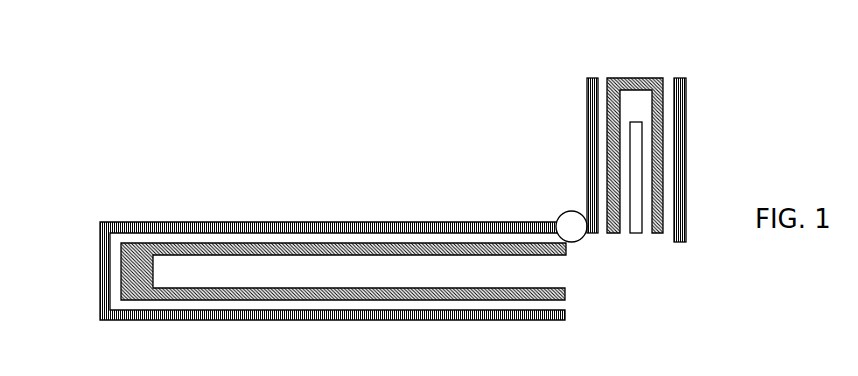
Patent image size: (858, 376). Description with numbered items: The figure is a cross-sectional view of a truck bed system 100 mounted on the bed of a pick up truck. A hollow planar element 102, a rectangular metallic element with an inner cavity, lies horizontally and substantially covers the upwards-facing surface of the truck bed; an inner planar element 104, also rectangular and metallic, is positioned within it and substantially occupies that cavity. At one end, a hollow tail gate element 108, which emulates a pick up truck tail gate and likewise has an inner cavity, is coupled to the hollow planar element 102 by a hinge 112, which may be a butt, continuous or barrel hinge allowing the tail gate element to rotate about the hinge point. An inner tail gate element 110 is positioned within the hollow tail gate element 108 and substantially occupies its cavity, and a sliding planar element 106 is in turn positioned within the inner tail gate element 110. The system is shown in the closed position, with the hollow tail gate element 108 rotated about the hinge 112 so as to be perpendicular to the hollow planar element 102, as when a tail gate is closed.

The truck bed system 100 is at (807, 83).
The hollow planar element 102 is at (100, 237).
The inner planar element 104 is at (566, 292).
The sliding planar element 106 is at (641, 234).
The hollow tail gate element 108 is at (592, 77).
The inner tail gate element 110 is at (633, 77).
The hinge 112 is at (569, 211).